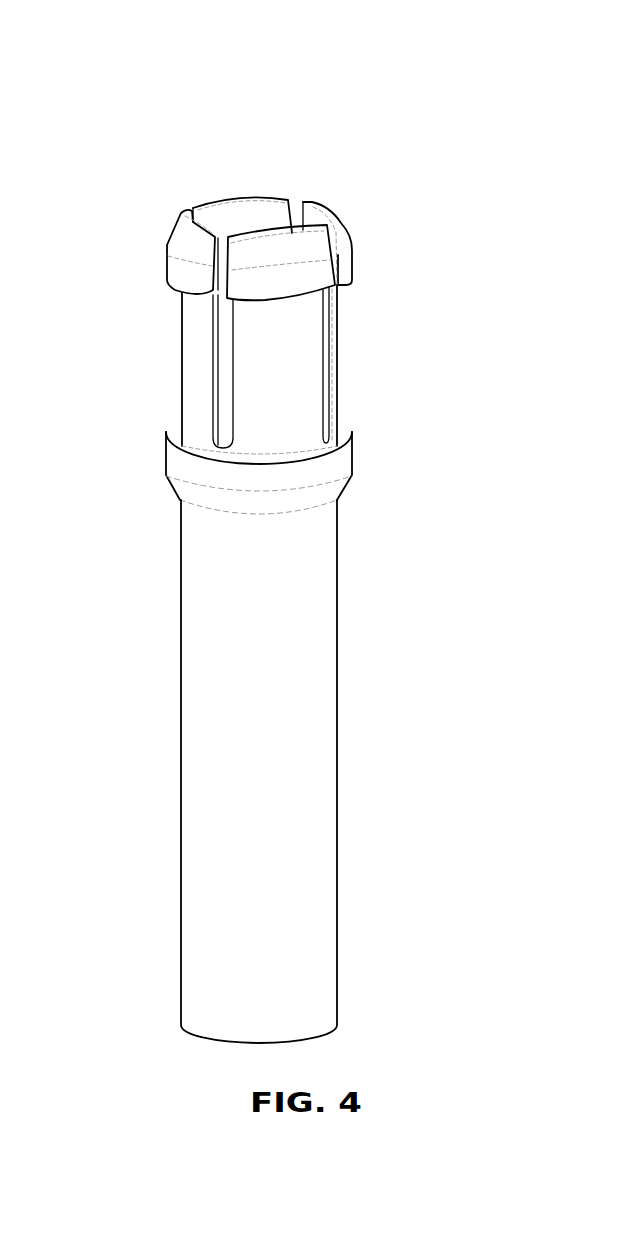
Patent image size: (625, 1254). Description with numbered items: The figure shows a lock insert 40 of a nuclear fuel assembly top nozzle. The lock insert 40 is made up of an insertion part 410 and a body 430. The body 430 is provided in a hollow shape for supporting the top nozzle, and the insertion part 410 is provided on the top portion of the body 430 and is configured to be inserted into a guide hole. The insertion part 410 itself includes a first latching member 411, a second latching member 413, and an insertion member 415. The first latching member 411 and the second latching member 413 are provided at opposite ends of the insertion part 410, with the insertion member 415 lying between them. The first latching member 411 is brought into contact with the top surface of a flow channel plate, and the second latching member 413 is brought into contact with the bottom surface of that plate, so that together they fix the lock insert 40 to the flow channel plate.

The lock insert 40 is at (396, 160).
The insertion part 410 is at (424, 493).
The first latching member 411 is at (171, 263).
The second latching member 413 is at (166, 459).
The insertion member 415 is at (186, 365).
The body 430 is at (424, 1025).